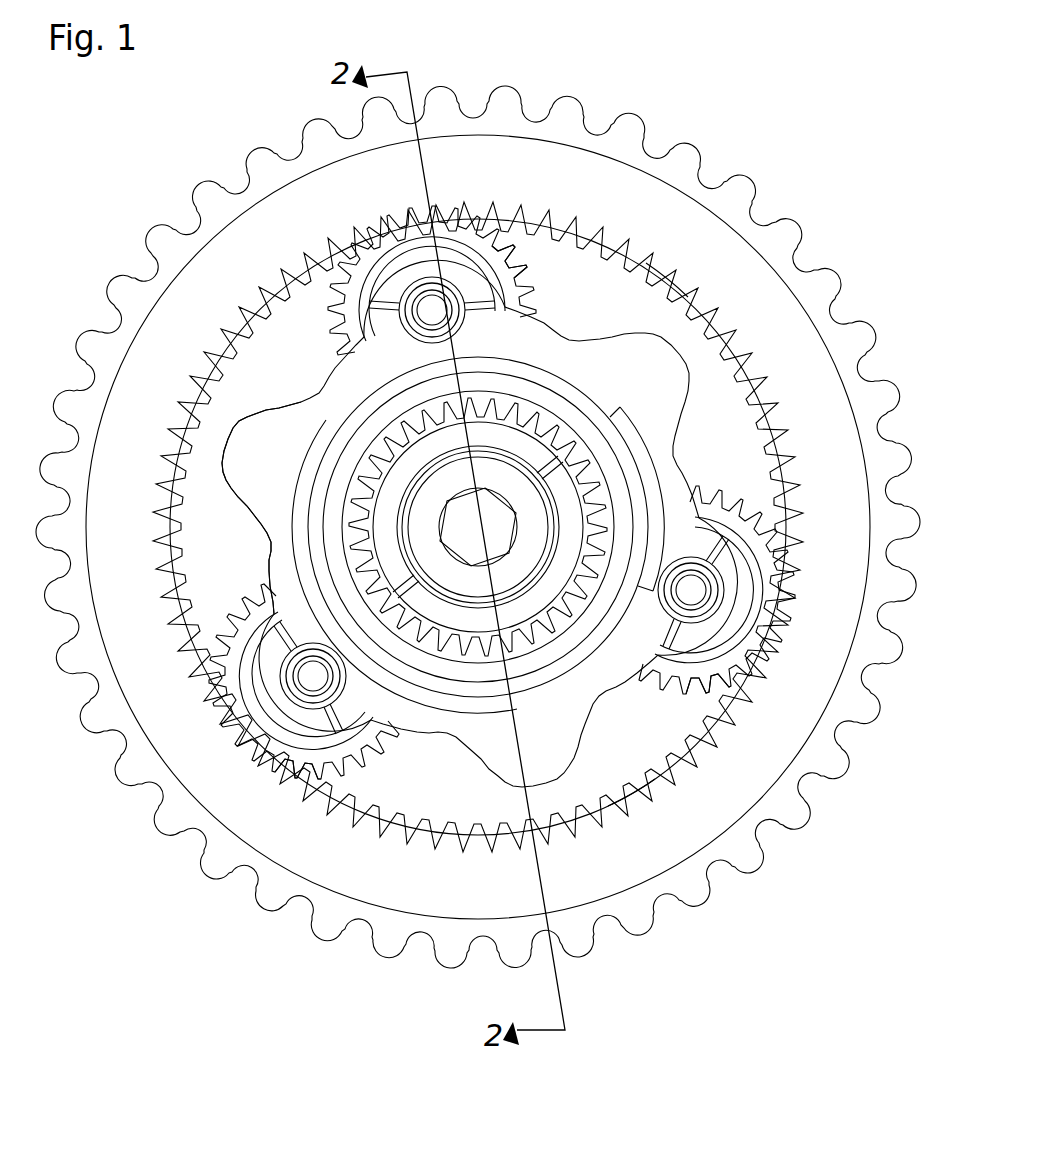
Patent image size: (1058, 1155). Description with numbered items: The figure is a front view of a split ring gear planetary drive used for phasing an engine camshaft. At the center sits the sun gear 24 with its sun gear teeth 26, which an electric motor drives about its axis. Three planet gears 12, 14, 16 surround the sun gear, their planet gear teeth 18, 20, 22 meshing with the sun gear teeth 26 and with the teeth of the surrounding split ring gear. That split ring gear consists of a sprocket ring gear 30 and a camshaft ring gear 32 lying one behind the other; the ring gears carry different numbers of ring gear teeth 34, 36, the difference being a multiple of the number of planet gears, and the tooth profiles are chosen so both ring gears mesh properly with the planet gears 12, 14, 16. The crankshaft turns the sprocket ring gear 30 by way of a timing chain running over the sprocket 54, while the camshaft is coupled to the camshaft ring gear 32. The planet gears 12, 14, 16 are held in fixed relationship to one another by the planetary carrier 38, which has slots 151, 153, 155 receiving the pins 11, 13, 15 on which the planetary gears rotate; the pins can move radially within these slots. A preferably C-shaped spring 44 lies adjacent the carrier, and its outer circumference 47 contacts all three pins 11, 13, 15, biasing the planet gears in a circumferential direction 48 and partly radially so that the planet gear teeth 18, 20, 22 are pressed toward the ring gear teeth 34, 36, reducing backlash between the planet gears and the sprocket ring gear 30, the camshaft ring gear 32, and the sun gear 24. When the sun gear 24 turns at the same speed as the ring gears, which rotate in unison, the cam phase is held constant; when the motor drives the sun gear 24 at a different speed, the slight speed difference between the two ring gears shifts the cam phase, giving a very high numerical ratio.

The circumferential direction 48 is at (328, 0).
The sprocket 54 is at (162, 240).
The sprocket ring gear 30 is at (795, 344).
The ring gear teeth 34 is at (692, 314).
The ring gear teeth 36 is at (664, 273).
The camshaft ring gear 32 is at (633, 800).
The sun gear 24 is at (527, 440).
The sun gear teeth 26 is at (527, 402).
The spring 44 is at (352, 414).
The outer circumference 47 is at (297, 494).
The planetary carrier 38 is at (533, 748).
The planet gear 16 is at (368, 268).
The planet gear teeth 22 is at (515, 250).
The pin 15 is at (429, 313).
The slot 155 is at (447, 278).
The planet gear teeth 20 is at (721, 514).
The planet gear 14 is at (710, 670).
The pin 13 is at (689, 586).
The slot 153 is at (733, 608).
The planet gear teeth 18 is at (365, 760).
The planet gear 12 is at (290, 757).
The pin 11 is at (310, 670).
The slot 151 is at (268, 680).